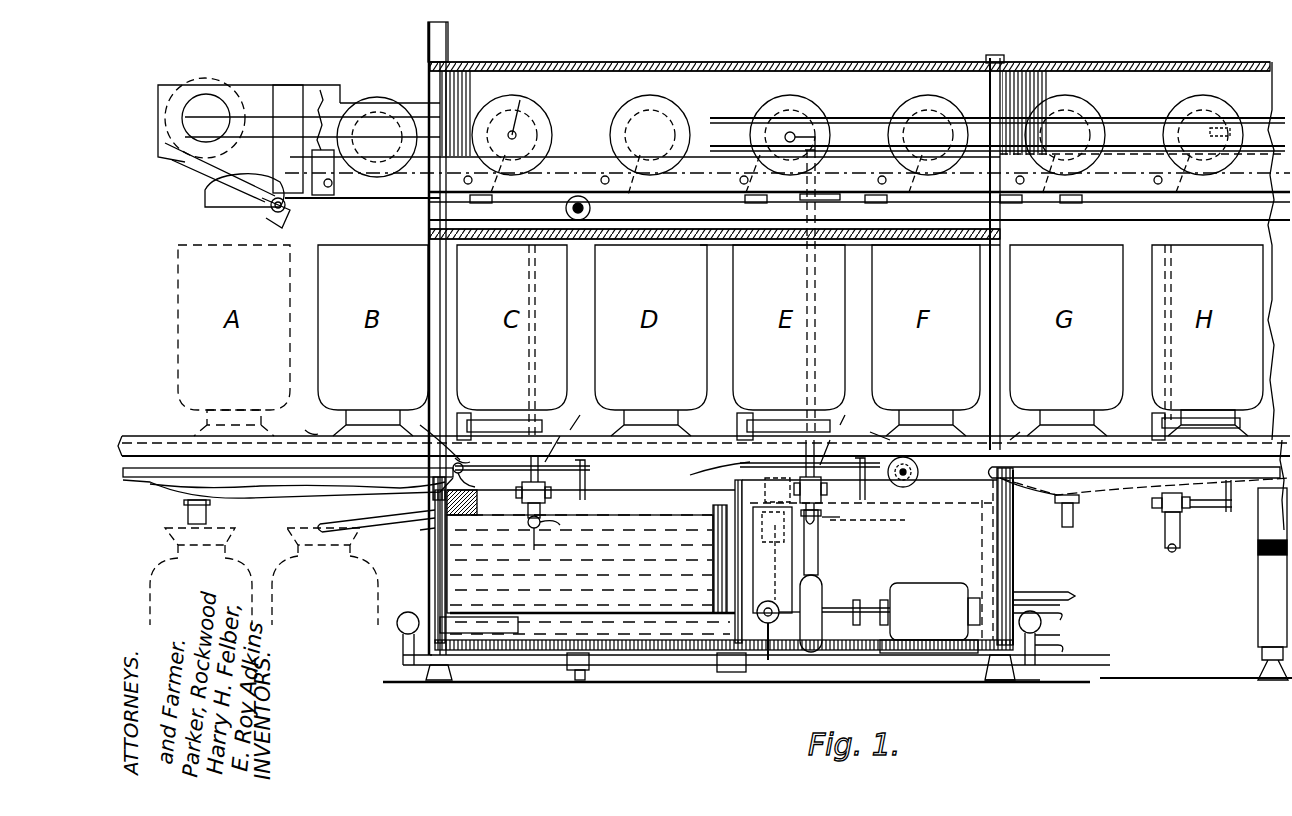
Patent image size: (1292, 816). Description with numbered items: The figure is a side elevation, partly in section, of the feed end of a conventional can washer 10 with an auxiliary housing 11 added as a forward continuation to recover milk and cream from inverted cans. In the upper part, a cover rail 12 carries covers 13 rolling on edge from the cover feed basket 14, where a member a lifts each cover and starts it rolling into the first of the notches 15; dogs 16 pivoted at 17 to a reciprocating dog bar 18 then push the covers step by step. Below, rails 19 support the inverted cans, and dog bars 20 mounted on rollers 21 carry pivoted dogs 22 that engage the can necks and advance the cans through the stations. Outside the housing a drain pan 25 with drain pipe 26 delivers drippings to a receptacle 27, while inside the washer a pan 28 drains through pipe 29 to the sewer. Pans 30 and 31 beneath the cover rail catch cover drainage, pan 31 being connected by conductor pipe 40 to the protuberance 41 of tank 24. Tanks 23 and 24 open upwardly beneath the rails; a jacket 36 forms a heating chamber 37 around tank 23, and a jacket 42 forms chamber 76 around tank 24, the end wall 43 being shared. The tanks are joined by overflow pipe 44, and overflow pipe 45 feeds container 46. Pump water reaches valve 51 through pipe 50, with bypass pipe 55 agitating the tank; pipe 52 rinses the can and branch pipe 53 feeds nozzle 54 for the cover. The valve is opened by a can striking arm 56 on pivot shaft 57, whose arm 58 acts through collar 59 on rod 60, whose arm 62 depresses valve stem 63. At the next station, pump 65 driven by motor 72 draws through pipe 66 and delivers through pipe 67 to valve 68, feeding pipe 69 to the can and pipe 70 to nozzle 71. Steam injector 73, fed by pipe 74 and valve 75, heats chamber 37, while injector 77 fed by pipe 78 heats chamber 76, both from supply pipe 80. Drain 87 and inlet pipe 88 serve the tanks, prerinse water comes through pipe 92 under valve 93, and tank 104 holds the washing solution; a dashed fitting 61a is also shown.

The can washer 10 is at (1182, 58).
The auxiliary housing 11 is at (845, 67).
The cover rail 12 is at (545, 165).
The covers 13 is at (545, 111).
The cover feed basket 14 is at (340, 95).
The notches 15 is at (500, 195).
The dogs 16 is at (612, 158).
The pivot 17 is at (730, 181).
The dog bar 18 is at (917, 201).
The rails 19 is at (262, 436).
The dog bars 20 is at (925, 436).
The rollers 21 is at (920, 473).
The dogs 22 is at (659, 422).
The tank 23 is at (433, 573).
The tank 24 is at (992, 531).
The drain pan 25 is at (248, 506).
The drain pipe 26 is at (186, 513).
The receptacle 27 is at (243, 561).
The pan 28 is at (1104, 488).
The pipe 29 is at (1060, 521).
The pan 30 is at (658, 242).
The pan 31 is at (905, 242).
The jacket 36 is at (425, 599).
The chamber 37 is at (536, 645).
The conductor pipe 40 is at (775, 495).
The protuberance 41 is at (768, 564).
The jacket 42 is at (1015, 557).
The end wall 43 is at (760, 556).
The overflow pipe 44 is at (710, 513).
The overflow pipe 45 is at (385, 526).
The container 46 is at (432, 541).
The pipe 50 is at (528, 551).
The valve 51 is at (520, 493).
The pipe 52 is at (474, 477).
The branch pipe 53 is at (564, 208).
The discharge nozzle 54 is at (518, 108).
The bypass pipe 55 is at (565, 522).
The arm 56 is at (488, 420).
The pivot shaft 57 is at (465, 413).
The arm 58 is at (432, 498).
The collar 59 is at (578, 443).
The reciprocating rod 60 is at (699, 433).
The pipe 61a is at (865, 525).
The arm 62 is at (585, 469).
The valve stem 63 is at (705, 485).
The pump 65 is at (826, 593).
The pipe 66 is at (772, 640).
The pipe 67 is at (822, 553).
The valve 68 is at (770, 535).
The pipe 69 is at (800, 480).
The pipe 70 is at (815, 209).
The nozzle 71 is at (800, 125).
The motor 72 is at (930, 591).
The steam injector device 73 is at (475, 617).
The pipe 74 is at (678, 667).
The valve 75 is at (588, 670).
The chamber 76 is at (758, 621).
The steam injector 77 is at (998, 651).
The pipe 78 is at (1018, 682).
The steam supply pipe 80 is at (1066, 593).
The valve controlled drain 87 is at (1062, 651).
The inlet pipe 88 is at (1060, 616).
The pipe 92 is at (1181, 533).
The valve 93 is at (1170, 505).
The tank 104 is at (1262, 623).
The member a is at (208, 192).